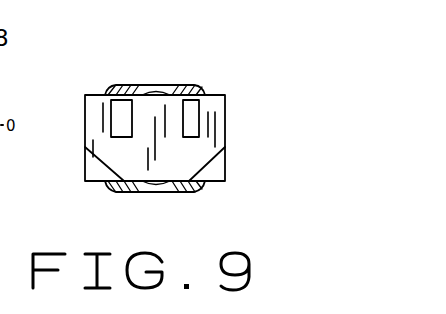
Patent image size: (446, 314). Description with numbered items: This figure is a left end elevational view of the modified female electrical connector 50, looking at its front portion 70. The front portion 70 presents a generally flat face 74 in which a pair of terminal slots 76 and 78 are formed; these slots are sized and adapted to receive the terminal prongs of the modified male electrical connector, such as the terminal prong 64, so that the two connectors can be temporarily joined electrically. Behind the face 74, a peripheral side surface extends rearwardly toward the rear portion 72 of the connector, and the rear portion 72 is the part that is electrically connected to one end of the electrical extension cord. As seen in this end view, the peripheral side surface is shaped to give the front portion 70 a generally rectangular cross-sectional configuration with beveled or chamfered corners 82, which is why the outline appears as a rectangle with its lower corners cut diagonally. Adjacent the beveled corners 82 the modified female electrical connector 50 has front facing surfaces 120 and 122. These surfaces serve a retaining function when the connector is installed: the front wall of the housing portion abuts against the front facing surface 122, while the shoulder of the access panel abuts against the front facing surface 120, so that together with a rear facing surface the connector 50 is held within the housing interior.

The modified female electrical connector 50 is at (232, 69).
The terminal prong 64 is at (14, 87).
The front portion 70 is at (88, 95).
The rear portion 72 is at (116, 84).
The face 74 is at (186, 160).
The terminal slot 76 is at (112, 121).
The terminal slot 78 is at (196, 121).
The beveled or chamfered corners 82 is at (85, 159).
The front facing surface 120 is at (88, 181).
The front facing surface 122 is at (215, 178).